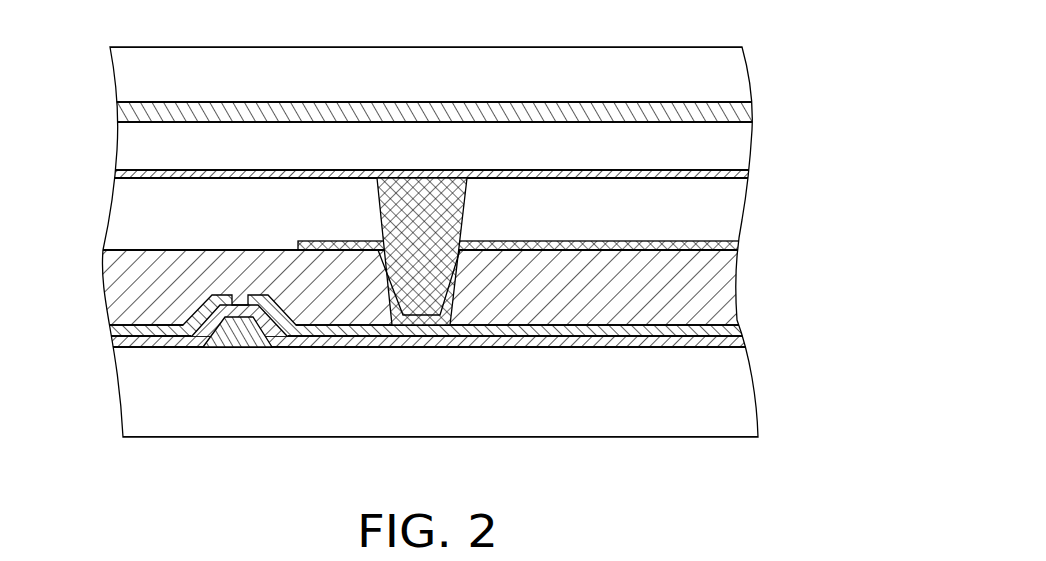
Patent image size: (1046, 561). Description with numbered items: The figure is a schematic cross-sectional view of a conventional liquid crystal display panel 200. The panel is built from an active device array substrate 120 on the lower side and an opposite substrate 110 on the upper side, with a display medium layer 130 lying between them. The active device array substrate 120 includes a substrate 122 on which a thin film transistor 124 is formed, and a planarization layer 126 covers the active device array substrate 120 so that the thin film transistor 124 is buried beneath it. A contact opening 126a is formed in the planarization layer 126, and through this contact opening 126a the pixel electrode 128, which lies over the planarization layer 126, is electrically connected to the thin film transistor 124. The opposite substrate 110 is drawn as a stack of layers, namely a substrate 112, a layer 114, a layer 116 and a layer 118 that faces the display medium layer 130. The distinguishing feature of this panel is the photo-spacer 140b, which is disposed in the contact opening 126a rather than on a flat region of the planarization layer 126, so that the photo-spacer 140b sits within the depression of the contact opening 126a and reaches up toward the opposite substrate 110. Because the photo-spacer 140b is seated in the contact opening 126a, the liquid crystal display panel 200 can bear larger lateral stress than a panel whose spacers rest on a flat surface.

The liquid crystal display panel 200 is at (758, 538).
The opposite substrate 110 is at (831, 43).
The second substrate 112 is at (733, 75).
The color filter layer 114 is at (740, 113).
The overcoat layer 116 is at (736, 145).
The common electrode 118 is at (737, 175).
The display medium layer 130 is at (713, 212).
The active device array substrate 120 is at (832, 252).
The first substrate 122 is at (735, 413).
The thin film transistor 124 is at (302, 362).
The planarization layer 126 is at (717, 295).
The contact opening 126a is at (393, 270).
The pixel electrode 128 is at (735, 248).
The photo-spacer 140b is at (380, 204).